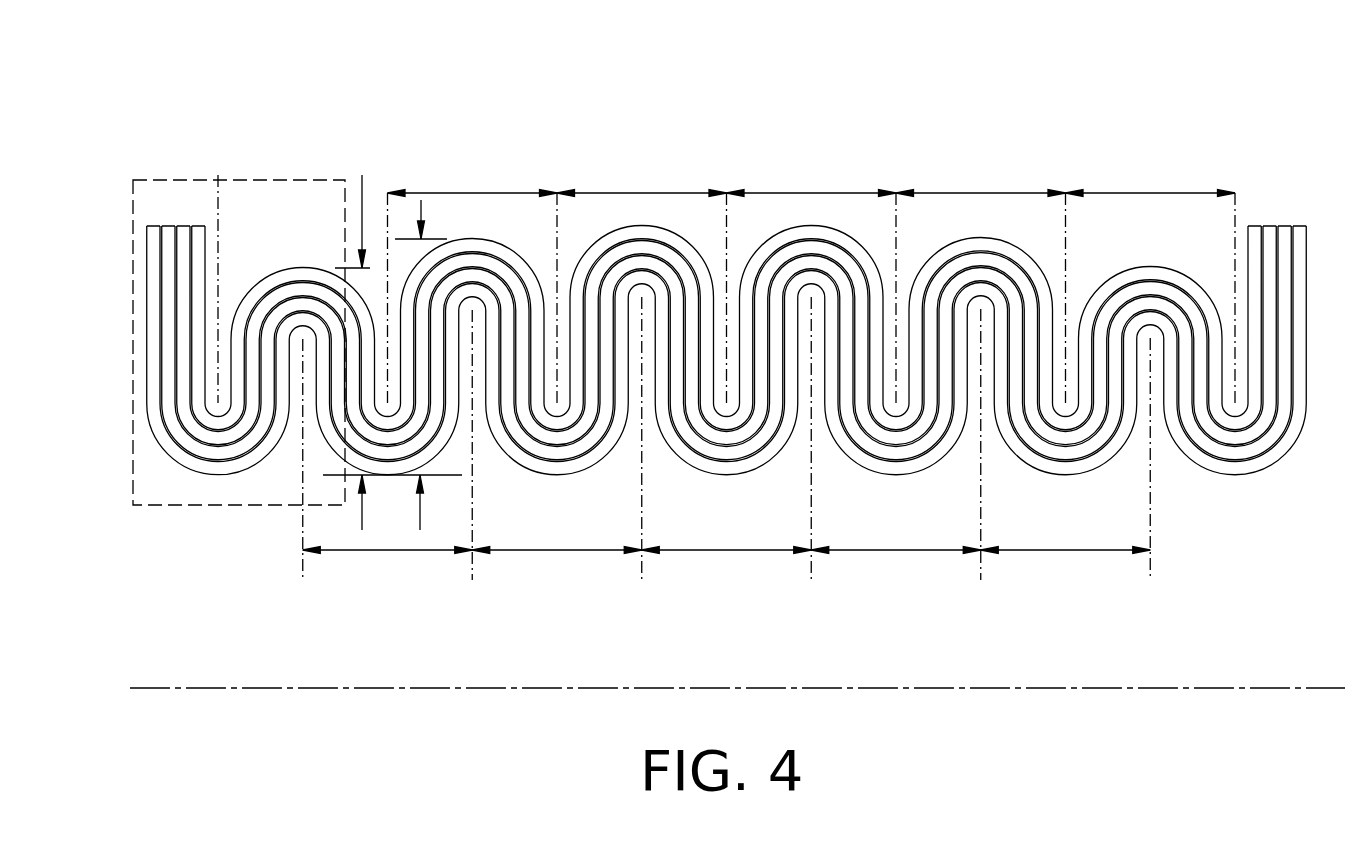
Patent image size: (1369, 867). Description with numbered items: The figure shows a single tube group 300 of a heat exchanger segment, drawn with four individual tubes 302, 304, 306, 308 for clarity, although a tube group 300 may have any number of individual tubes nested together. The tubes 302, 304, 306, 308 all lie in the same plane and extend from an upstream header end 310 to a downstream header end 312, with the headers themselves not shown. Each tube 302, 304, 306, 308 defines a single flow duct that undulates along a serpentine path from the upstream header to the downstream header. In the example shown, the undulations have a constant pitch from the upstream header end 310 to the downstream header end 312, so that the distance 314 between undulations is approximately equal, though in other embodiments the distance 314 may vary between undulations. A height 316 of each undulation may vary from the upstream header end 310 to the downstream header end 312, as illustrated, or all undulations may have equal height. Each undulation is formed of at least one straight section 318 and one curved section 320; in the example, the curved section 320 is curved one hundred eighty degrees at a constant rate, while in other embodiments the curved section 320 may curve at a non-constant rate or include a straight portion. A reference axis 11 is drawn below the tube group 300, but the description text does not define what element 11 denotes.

The tube group 300 is at (713, 268).
The tube 302 is at (153, 226).
The tube 304 is at (170, 226).
The tube 306 is at (187, 226).
The tube 308 is at (200, 226).
The upstream header end 310 is at (118, 210).
The downstream header end 312 is at (1310, 192).
The distance between undulations 314 is at (476, 193).
The height of undulation 316 is at (362, 198).
The straight section 318 is at (986, 430).
The curved section 320 is at (986, 230).
The axis 11 is at (788, 688).